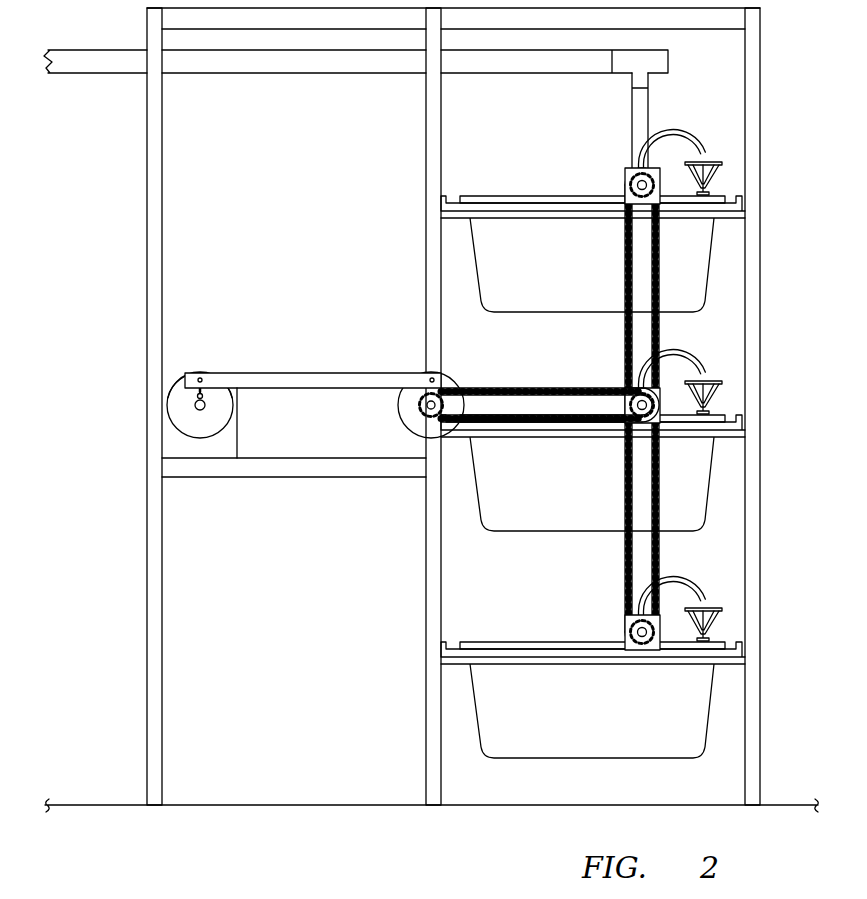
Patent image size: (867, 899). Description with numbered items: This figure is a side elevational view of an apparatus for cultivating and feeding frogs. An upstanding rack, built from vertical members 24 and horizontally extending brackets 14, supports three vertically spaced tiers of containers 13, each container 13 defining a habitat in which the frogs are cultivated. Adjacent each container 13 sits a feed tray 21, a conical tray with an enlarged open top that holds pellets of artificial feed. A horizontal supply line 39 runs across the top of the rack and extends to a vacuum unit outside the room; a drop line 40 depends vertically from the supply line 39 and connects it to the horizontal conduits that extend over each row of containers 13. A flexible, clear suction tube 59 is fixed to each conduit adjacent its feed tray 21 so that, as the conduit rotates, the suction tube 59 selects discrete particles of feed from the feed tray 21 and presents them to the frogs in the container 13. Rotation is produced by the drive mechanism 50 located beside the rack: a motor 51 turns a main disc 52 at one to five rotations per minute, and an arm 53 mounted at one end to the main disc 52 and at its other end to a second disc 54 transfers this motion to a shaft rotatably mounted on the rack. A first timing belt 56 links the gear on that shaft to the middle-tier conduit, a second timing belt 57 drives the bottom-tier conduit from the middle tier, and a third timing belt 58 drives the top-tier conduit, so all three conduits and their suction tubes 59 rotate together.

The container 13 is at (522, 532).
The horizontally extending bracket 14 is at (455, 668).
The feed tray 21 is at (715, 160).
The vertical member 24 is at (425, 566).
The supply line 39 is at (290, 77).
The drop line 40 is at (632, 118).
The drive mechanism 50 is at (278, 378).
The motor 51 is at (198, 356).
The main disc 52 is at (232, 418).
The arm 53 is at (296, 372).
The second disc 54 is at (403, 423).
The first timing belt 56 is at (533, 389).
The second timing belt 57 is at (625, 547).
The third timing belt 58 is at (625, 328).
The suction tube 59 is at (674, 130).